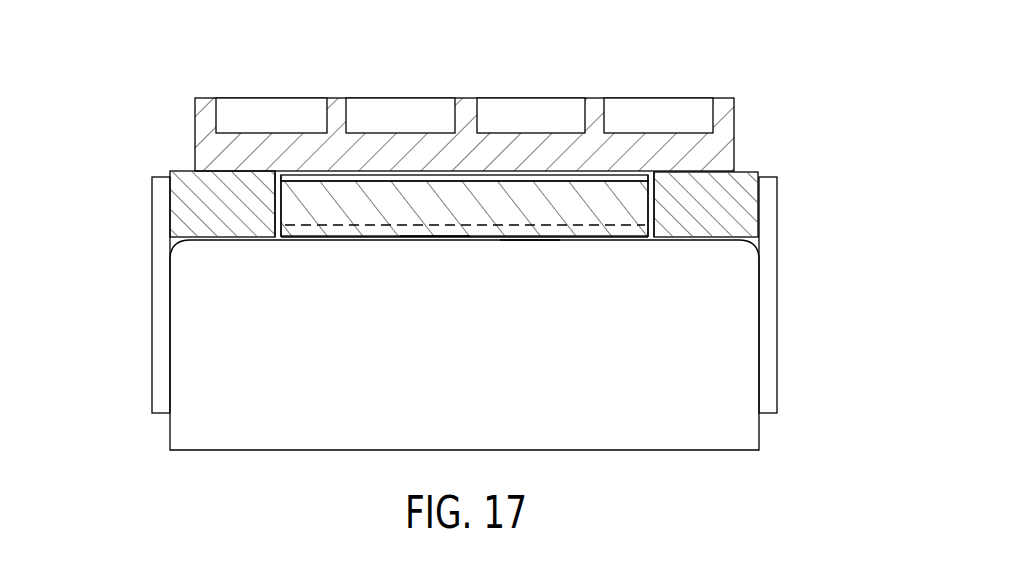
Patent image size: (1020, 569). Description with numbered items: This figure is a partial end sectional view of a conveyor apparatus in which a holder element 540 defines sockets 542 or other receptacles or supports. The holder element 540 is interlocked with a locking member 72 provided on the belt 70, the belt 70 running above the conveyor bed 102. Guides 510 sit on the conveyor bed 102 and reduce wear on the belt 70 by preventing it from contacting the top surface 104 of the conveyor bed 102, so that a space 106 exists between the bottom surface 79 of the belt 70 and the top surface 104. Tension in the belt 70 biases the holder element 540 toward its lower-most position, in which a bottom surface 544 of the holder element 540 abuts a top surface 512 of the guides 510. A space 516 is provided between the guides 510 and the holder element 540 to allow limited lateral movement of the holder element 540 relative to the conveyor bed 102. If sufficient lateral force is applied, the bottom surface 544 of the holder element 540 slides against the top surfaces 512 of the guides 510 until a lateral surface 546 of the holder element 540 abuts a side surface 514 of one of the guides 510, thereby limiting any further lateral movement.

The belt 70 is at (568, 248).
The locking member 72 is at (488, 207).
The bottom surface 79 is at (374, 238).
The conveyor bed 102 is at (750, 439).
The top surface 104 is at (527, 240).
The space 106 is at (437, 237).
The guides 510 is at (448, 196).
The top surface 512 is at (204, 193).
The side surface 514 is at (654, 234).
The space 516 is at (283, 210).
The holder element 540 is at (514, 89).
The sockets 542 is at (692, 103).
The bottom surface 544 is at (228, 172).
The lateral surface 546 is at (657, 213).